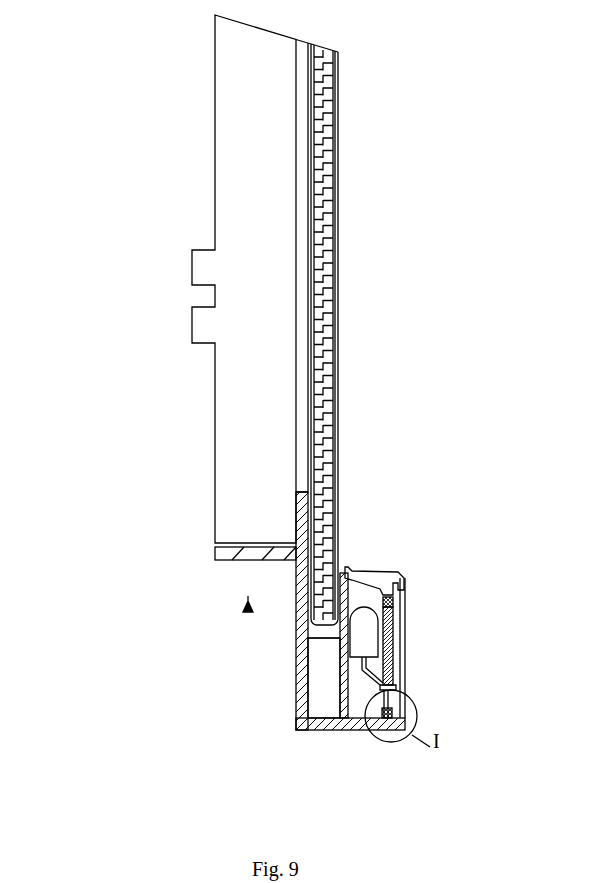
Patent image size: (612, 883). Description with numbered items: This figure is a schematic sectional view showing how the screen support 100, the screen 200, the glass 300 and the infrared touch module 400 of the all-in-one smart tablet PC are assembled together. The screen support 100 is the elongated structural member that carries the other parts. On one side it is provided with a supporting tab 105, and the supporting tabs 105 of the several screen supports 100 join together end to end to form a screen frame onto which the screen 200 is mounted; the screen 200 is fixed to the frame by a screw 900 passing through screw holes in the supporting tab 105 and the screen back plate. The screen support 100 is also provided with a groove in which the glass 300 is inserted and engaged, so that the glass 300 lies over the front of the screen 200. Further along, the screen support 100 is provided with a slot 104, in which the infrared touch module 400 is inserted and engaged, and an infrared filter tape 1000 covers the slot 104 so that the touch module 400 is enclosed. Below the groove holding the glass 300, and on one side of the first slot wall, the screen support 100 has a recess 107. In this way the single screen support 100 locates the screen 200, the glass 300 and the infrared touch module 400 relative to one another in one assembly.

The screen 200 is at (258, 421).
The glass 300 is at (340, 483).
The supporting tab 105 is at (228, 556).
The screen support 100 is at (298, 725).
The recess 107 is at (325, 682).
The infrared filter tape 1000 is at (352, 571).
The infrared touch module 400 is at (365, 636).
The slot 104 is at (365, 690).
The screw 900 is at (245, 612).